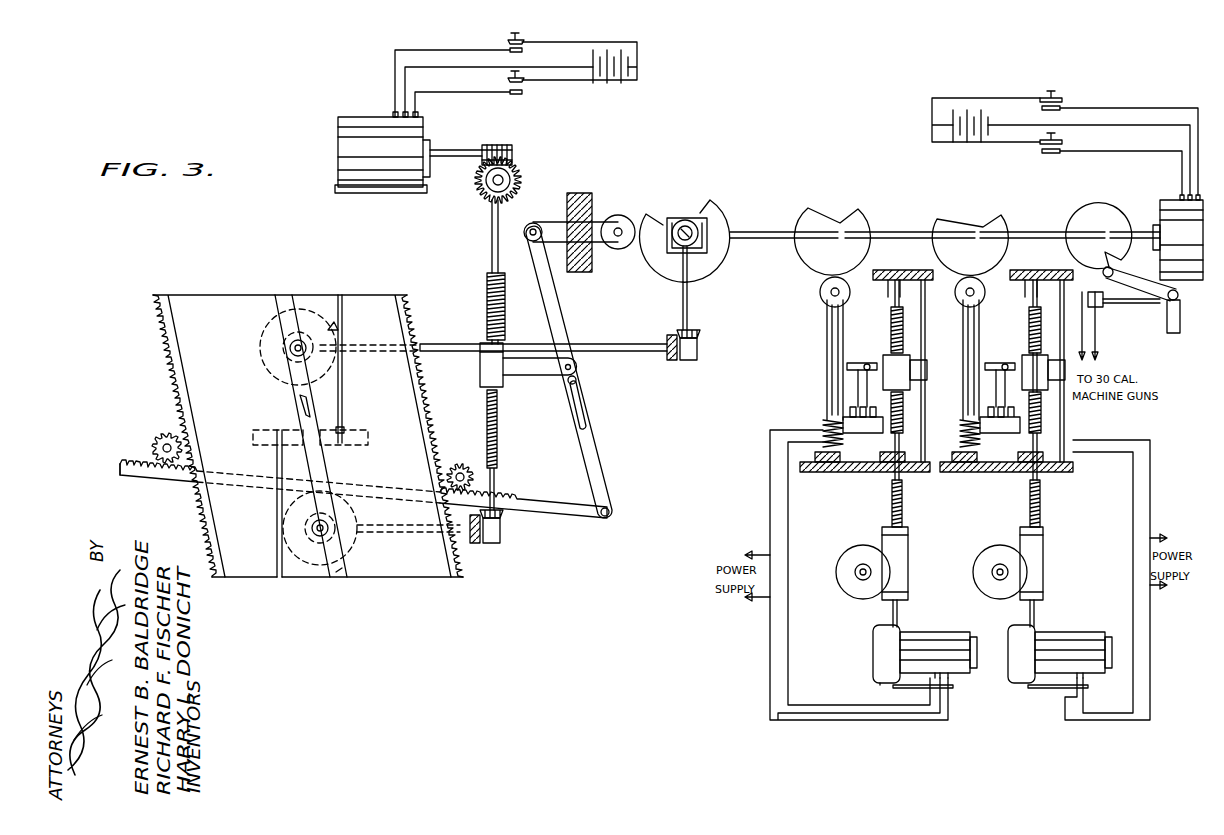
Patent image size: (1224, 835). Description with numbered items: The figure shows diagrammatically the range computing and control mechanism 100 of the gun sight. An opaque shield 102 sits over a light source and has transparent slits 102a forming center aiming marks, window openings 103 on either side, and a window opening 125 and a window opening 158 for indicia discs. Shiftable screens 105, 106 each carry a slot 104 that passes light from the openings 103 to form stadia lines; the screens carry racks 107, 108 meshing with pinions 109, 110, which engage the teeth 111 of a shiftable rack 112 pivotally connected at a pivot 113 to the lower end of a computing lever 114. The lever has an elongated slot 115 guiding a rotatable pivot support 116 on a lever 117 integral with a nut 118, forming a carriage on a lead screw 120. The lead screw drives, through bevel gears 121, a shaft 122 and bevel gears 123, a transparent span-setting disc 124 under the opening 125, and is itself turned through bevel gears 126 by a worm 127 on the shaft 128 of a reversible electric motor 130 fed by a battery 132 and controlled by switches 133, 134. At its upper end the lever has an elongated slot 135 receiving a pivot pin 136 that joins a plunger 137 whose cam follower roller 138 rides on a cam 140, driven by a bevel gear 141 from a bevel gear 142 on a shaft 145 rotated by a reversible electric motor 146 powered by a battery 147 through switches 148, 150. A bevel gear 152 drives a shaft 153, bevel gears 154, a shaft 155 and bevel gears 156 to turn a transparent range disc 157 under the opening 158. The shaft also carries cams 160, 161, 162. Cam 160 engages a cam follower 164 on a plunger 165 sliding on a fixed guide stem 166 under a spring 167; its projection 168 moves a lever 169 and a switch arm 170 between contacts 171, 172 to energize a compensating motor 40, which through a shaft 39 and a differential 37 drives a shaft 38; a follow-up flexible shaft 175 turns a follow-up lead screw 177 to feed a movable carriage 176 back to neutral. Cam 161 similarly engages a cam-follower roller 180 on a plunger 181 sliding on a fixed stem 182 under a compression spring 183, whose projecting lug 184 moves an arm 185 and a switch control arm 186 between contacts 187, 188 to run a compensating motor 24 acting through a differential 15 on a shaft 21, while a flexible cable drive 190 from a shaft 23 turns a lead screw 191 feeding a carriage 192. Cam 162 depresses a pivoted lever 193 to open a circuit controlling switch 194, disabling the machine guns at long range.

The range computing and control mechanism 100 is at (635, 428).
The opaque shield 102 is at (340, 578).
The transparent slits 102a is at (304, 398).
The transparent window openings 103 is at (265, 430).
The slot 104 is at (342, 392).
The shiftable screen 105 is at (245, 578).
The shiftable screen 106 is at (400, 572).
The rack 107 is at (203, 540).
The rack 108 is at (463, 577).
The pinion 109 is at (165, 433).
The pinion 110 is at (464, 463).
The teeth 111 is at (128, 462).
The shiftable rack 112 is at (156, 477).
The pivot pin 113 is at (600, 518).
The computing lever 114 is at (598, 455).
The elongated slot 115 is at (588, 420).
The rotatable pivot support 116 is at (578, 372).
The lever 117 is at (535, 368).
The nut 118 is at (505, 385).
The lead screw 120 is at (500, 450).
The bevel gears 121 is at (488, 528).
The shaft 122 is at (470, 545).
The bevel gears 123 is at (283, 541).
The transparent disc 124 is at (345, 572).
The window opening 125 is at (352, 495).
The bevel gears 126 is at (480, 190).
The worm 127 is at (506, 145).
The shaft 128 is at (449, 149).
The reversible electric motor 130 is at (376, 113).
The battery 132 is at (618, 80).
The switch 133 is at (526, 91).
The switch 134 is at (522, 47).
The elongated slot 135 is at (530, 222).
The pivot pin 136 is at (528, 240).
The plunger 137 is at (595, 215).
The cam follower roller 138 is at (625, 216).
The cam 140 is at (655, 262).
The bevel gear 141 is at (680, 221).
The bevel gear 142 is at (710, 251).
The shaft 145 is at (757, 232).
The reversible electric motor 146 is at (1161, 205).
The battery 147 is at (990, 114).
The switch 148 is at (1062, 100).
The switch 150 is at (1062, 142).
The bevel gear 152 is at (700, 262).
The shaft 153 is at (688, 310).
The bevel gears 154 is at (692, 356).
The shaft 155 is at (605, 345).
The bevel gears 156 is at (324, 313).
The transparent disc 157 is at (268, 325).
The transparent window opening 158 is at (288, 385).
The cam 160 is at (825, 215).
The cam 161 is at (955, 217).
The cam 162 is at (1100, 220).
The cam follower 164 is at (822, 293).
The plunger 165 is at (827, 318).
The fixed guide stem 166 is at (840, 472).
The spring 167 is at (823, 430).
The projection 168 is at (845, 355).
The lever 169 is at (858, 362).
The switch arm 170 is at (847, 367).
The contact 171 is at (850, 410).
The contact 172 is at (848, 433).
The follow-up flexible shaft 175 is at (903, 495).
The movable carriage 176 is at (910, 368).
The follow-up lead screw 177 is at (905, 420).
The cam-follower roller 180 is at (984, 293).
The plunger 181 is at (980, 335).
The fixed stem 182 is at (973, 472).
The compression spring 183 is at (960, 435).
The projecting lug 184 is at (987, 360).
The arm 185 is at (991, 367).
The switch control arm 186 is at (988, 406).
The contact 187 is at (1042, 415).
The contact 188 is at (988, 412).
The follow-up flexible cable drive 190 is at (1040, 497).
The lead screw 191 is at (1045, 410).
The carriage 192 is at (1048, 370).
The pivoted lever 193 is at (1180, 290).
The circuit controlling switch 194 is at (1110, 310).
The differential 15 is at (990, 545).
The shaft 21 is at (997, 573).
The shaft 23 is at (1043, 610).
The compensating motor 24 is at (1070, 640).
The differential 37 is at (840, 545).
The shaft 38 is at (860, 574).
The shaft 39 is at (882, 605).
The compensating motor 40 is at (930, 636).